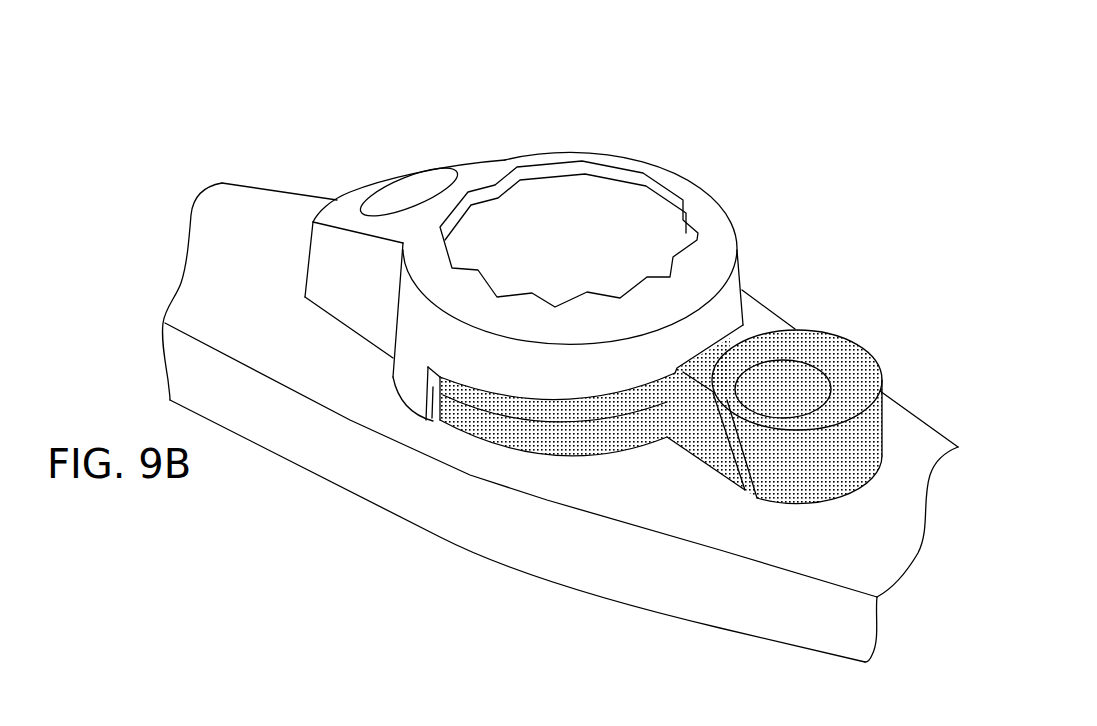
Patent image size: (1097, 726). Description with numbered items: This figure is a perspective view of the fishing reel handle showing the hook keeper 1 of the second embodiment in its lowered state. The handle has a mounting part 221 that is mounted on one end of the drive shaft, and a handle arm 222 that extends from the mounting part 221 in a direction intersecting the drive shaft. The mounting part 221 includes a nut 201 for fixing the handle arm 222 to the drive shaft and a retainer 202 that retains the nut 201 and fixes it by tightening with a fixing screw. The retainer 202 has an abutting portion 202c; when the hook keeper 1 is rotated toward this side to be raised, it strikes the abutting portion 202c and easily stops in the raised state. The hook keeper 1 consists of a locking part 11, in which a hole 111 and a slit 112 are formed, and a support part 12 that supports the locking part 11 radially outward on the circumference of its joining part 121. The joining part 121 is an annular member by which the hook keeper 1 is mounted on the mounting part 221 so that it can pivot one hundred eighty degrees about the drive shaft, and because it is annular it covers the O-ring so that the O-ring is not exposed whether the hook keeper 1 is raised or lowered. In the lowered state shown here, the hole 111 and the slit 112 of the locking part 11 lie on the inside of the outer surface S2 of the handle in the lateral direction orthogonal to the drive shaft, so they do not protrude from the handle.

The mounting part 221 is at (503, 122).
The handle arm 222 is at (282, 208).
The retainer 202 is at (467, 187).
The nut 201 is at (562, 195).
The abutting portion 202c is at (427, 421).
The support part 12 is at (667, 440).
The joining part 121 is at (500, 438).
The outer surface S2 is at (524, 543).
The hook keeper 1 is at (838, 338).
The locking part 11 is at (866, 366).
The hole 111 is at (784, 340).
The slit 112 is at (756, 502).